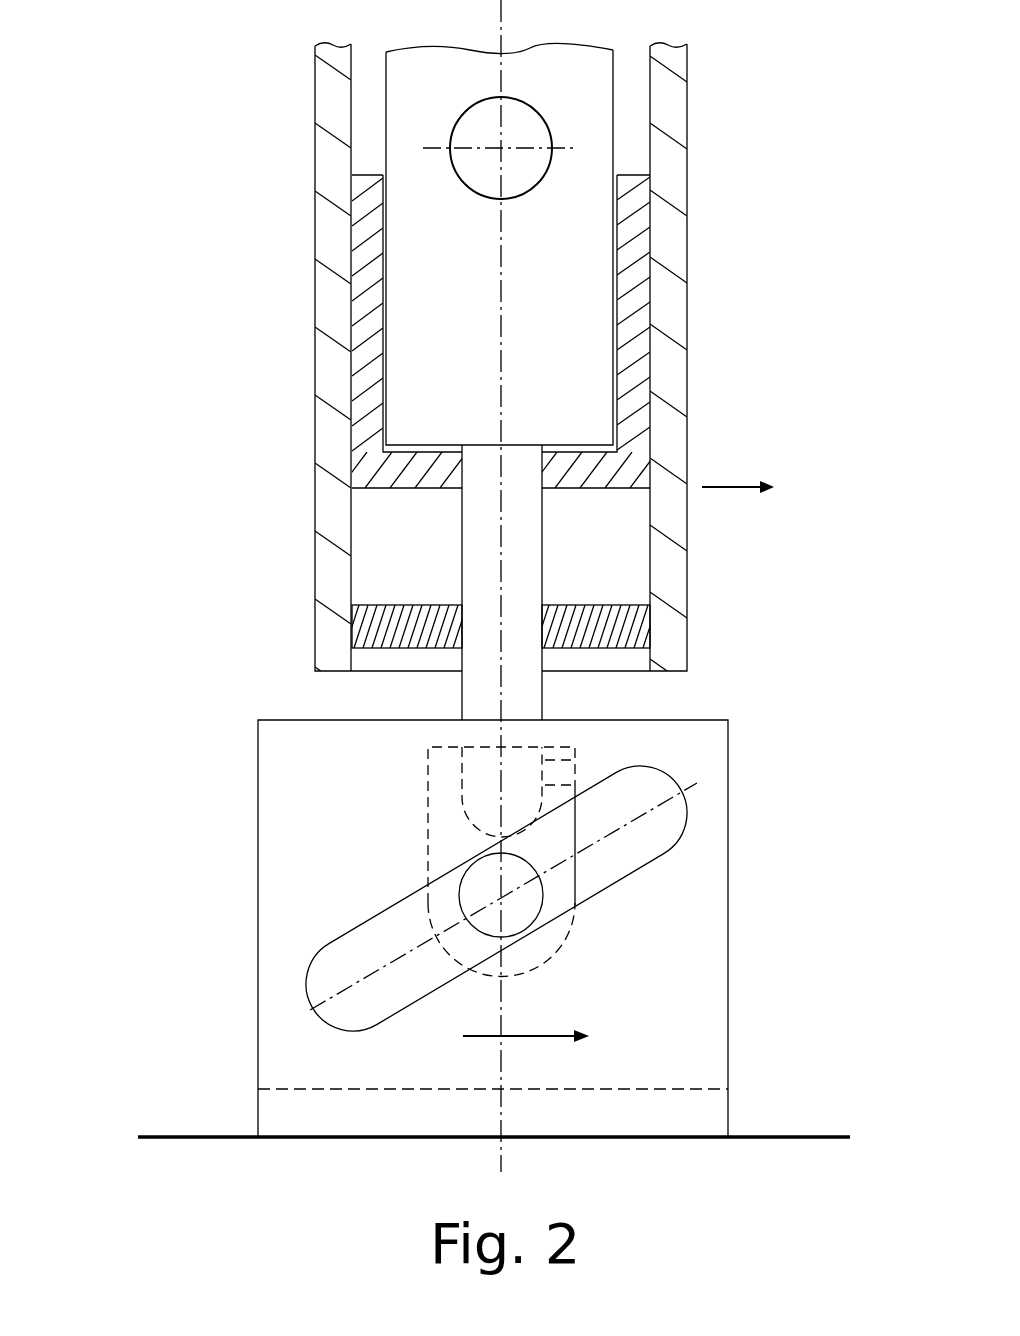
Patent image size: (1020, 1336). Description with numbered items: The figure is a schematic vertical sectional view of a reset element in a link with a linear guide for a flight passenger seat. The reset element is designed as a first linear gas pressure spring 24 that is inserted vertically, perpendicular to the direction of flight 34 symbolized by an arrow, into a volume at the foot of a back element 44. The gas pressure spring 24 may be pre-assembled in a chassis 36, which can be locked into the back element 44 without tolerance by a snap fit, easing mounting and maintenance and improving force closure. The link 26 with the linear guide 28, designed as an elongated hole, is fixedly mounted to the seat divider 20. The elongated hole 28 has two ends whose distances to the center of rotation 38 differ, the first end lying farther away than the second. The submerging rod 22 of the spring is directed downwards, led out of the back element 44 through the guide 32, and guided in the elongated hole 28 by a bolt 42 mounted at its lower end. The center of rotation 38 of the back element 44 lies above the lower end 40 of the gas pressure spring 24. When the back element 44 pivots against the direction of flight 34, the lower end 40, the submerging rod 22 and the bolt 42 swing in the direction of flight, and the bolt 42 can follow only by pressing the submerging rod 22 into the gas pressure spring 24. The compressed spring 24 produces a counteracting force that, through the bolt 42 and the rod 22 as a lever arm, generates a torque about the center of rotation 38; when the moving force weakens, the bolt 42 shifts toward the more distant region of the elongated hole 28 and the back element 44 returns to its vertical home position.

The seat divider 20 is at (198, 1180).
The submerging rod 22 is at (477, 633).
The first linear gas pressure spring 24 is at (435, 247).
The link 26 is at (282, 755).
The linear guide 28 is at (310, 957).
The guide 32 is at (600, 617).
The direction of flight 34 is at (730, 487).
The chassis 36 is at (637, 370).
The center of rotation 38 is at (528, 177).
The lower end 40 is at (412, 410).
The bolt 42 is at (548, 943).
The back element 44 is at (695, 130).